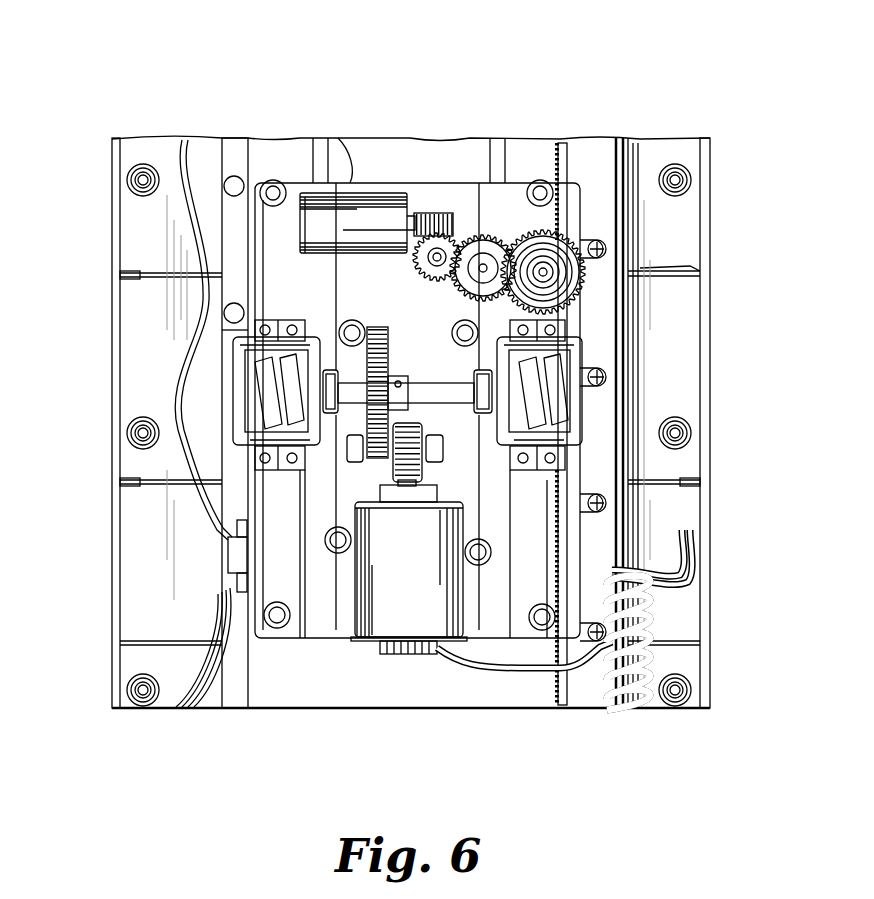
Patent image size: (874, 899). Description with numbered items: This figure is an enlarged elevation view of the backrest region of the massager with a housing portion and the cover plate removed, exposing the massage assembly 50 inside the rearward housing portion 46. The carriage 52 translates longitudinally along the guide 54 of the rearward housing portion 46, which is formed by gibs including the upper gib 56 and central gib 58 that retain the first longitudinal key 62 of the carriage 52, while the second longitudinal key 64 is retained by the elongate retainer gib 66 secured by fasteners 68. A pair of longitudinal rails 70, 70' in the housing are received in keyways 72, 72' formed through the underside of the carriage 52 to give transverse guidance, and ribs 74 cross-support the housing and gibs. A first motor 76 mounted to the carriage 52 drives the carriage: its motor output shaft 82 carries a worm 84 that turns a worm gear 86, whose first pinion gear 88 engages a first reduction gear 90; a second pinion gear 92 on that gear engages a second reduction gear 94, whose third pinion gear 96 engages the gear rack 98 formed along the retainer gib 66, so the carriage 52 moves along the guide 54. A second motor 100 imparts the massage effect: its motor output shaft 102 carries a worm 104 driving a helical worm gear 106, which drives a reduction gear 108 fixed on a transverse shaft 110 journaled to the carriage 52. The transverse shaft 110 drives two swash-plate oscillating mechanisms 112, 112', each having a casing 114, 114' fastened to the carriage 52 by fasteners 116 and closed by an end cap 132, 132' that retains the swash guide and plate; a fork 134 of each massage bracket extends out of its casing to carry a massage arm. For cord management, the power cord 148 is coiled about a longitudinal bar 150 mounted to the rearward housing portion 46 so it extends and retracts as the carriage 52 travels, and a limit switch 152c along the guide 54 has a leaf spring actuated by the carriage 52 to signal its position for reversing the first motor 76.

The massage assembly 50 is at (441, 30).
The rearward housing portion 46 is at (112, 150).
The carriage 52 is at (240, 210).
The longitudinal guide 54 is at (231, 128).
The upper gib 56 is at (218, 150).
The central gib 58 is at (233, 622).
The first longitudinal key 62 is at (225, 528).
The second longitudinal key 64 is at (567, 558).
The elongate retainer gib 66 is at (590, 593).
The fasteners 68 is at (690, 700).
The longitudinal rail 70 is at (378, 456).
The longitudinal rail 70' is at (522, 508).
The keyway 72 is at (346, 700).
The keyway 72' is at (546, 451).
The ribs 74 is at (647, 637).
The first motor 76 is at (370, 193).
The motor output shaft 82 is at (415, 213).
The worm 84 is at (437, 235).
The worm gear 86 is at (468, 240).
The first pinion gear 88 is at (535, 228).
The first reduction gear 90 is at (505, 236).
The second pinion gear 92 is at (555, 250).
The second reduction gear 94 is at (600, 290).
The third pinion gear 96 is at (560, 275).
The gear rack 98 is at (600, 327).
The second motor 100 is at (348, 622).
The motor output shaft 102 is at (440, 487).
The worm 104 is at (421, 472).
The helical worm gear 106 is at (428, 450).
The reduction gear 108 is at (363, 418).
The transverse shaft 110 is at (352, 395).
The oscillating mechanism 112 is at (174, 389).
The oscillating mechanism 112' is at (627, 391).
The casing 114 is at (177, 449).
The casing 114' is at (700, 427).
The fasteners 116 is at (257, 327).
The end cap 132 is at (180, 380).
The end cap 132' is at (655, 395).
The fork 134 is at (290, 395).
The power cord 148 is at (643, 708).
The longitudinal bar 150 is at (627, 195).
The limit switch 152c is at (222, 557).